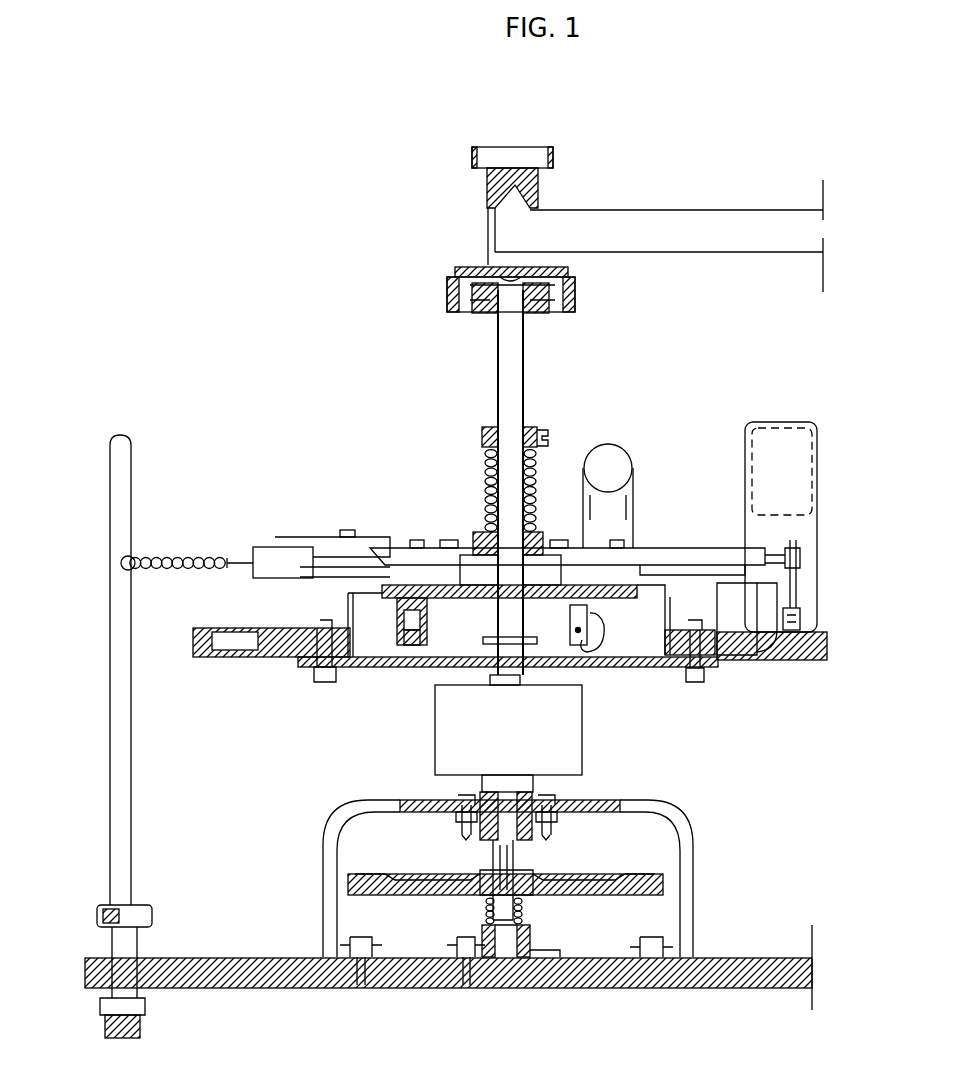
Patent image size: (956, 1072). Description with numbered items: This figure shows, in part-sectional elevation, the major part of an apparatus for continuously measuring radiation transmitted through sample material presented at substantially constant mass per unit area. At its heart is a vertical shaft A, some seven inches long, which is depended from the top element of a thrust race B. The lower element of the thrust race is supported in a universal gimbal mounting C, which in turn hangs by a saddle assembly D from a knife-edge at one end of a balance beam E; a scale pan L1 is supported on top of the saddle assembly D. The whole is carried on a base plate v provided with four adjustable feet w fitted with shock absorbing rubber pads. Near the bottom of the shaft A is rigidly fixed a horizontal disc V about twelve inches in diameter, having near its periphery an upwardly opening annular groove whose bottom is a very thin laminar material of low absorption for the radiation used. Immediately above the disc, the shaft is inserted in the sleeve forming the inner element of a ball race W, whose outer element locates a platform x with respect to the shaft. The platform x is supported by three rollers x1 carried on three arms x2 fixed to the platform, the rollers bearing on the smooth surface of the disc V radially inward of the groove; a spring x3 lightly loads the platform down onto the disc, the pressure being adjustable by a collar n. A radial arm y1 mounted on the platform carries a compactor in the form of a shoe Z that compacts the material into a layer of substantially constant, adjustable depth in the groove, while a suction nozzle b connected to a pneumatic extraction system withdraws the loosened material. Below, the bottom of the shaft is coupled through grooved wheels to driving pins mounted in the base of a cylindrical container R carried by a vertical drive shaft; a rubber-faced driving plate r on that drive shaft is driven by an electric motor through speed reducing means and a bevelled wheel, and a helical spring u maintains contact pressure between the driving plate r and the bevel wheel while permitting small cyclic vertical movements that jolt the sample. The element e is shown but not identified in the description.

The scale pan L1 is at (500, 157).
The saddle assembly D is at (487, 182).
The balance beam E is at (763, 220).
The universal gimbal mounting C is at (452, 283).
The thrust race B is at (480, 318).
The vertical shaft A is at (500, 382).
The collar n is at (485, 437).
The spring x3 is at (530, 475).
The suction nozzle b is at (622, 520).
The radial arm y1 is at (652, 555).
The ball race W is at (465, 555).
The platform x is at (375, 570).
The roller x1 is at (620, 705).
The arm x2 is at (637, 628).
The disc V is at (280, 648).
The shoe Z is at (745, 665).
The stop e is at (805, 630).
The cylindrical container R is at (560, 718).
The helical spring u is at (515, 858).
The driving plate r is at (660, 878).
The base plate v is at (100, 968).
The adjustable feet w is at (102, 912).